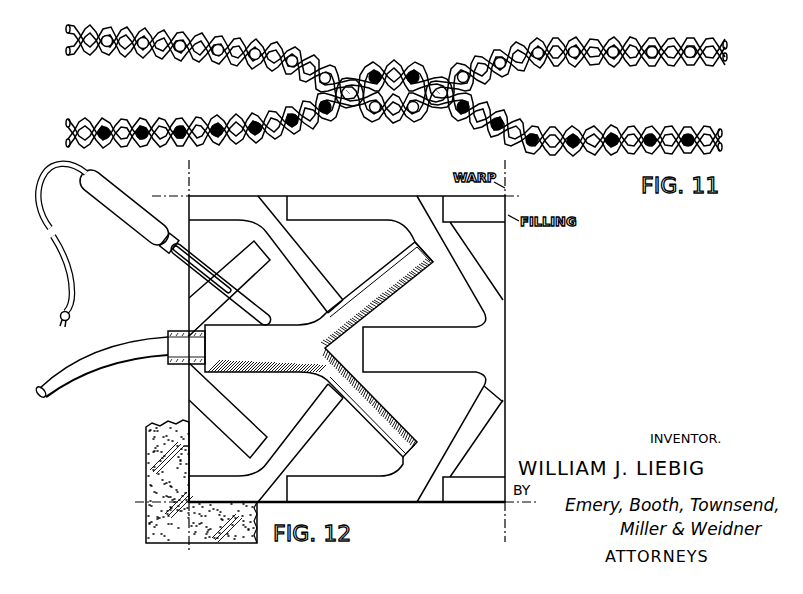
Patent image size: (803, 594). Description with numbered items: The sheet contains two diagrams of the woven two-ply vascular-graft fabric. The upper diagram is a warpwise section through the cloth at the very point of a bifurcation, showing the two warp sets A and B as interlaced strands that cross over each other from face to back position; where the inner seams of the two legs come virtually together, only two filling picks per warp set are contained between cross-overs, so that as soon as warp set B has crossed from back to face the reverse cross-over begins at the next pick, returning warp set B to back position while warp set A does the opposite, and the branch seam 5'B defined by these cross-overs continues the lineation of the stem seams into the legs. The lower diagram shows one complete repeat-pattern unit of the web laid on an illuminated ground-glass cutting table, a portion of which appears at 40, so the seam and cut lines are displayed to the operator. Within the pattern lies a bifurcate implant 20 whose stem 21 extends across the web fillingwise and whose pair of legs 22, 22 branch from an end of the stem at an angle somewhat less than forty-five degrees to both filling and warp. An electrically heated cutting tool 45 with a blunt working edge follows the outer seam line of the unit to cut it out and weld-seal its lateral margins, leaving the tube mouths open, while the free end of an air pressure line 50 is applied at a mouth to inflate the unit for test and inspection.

In FIG. 11, the warp set A is at (160, 33).
In FIG. 11, the warp set B is at (110, 120).
In FIG. 11, the branch seam 5'B is at (400, 67).
In FIG. 12, the bifurcate implant 20 is at (293, 373).
In FIG. 12, the stem 21 is at (414, 327).
In FIG. 12, the legs 22 is at (457, 277).
In FIG. 12, the glass cutting table 40 is at (146, 452).
In FIG. 12, the heated cutting tool 45 is at (120, 212).
In FIG. 12, the air pressure line 50 is at (117, 355).